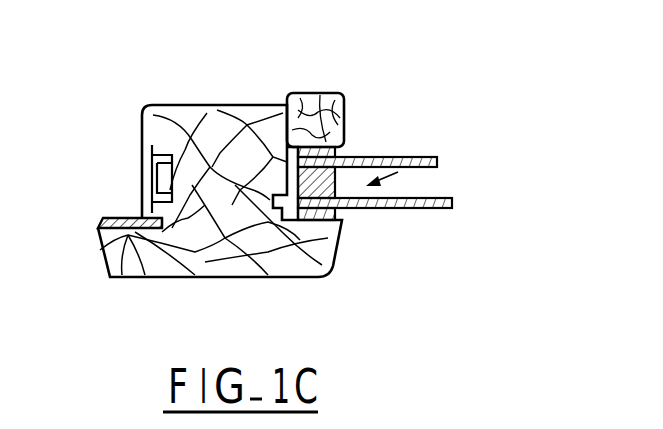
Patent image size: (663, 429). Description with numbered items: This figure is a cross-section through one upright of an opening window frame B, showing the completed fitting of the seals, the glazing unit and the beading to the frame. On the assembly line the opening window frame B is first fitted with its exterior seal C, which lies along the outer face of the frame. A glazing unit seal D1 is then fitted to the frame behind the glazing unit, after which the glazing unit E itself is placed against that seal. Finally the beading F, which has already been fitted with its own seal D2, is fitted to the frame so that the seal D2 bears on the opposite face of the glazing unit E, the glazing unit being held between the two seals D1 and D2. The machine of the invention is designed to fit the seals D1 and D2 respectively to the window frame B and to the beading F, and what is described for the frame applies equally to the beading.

The opening window frame B is at (215, 145).
The exterior seal C is at (122, 217).
The beading F is at (321, 99).
The beading seal D2 is at (338, 154).
The glazing unit seal D1 is at (340, 210).
The glazing unit E is at (411, 157).